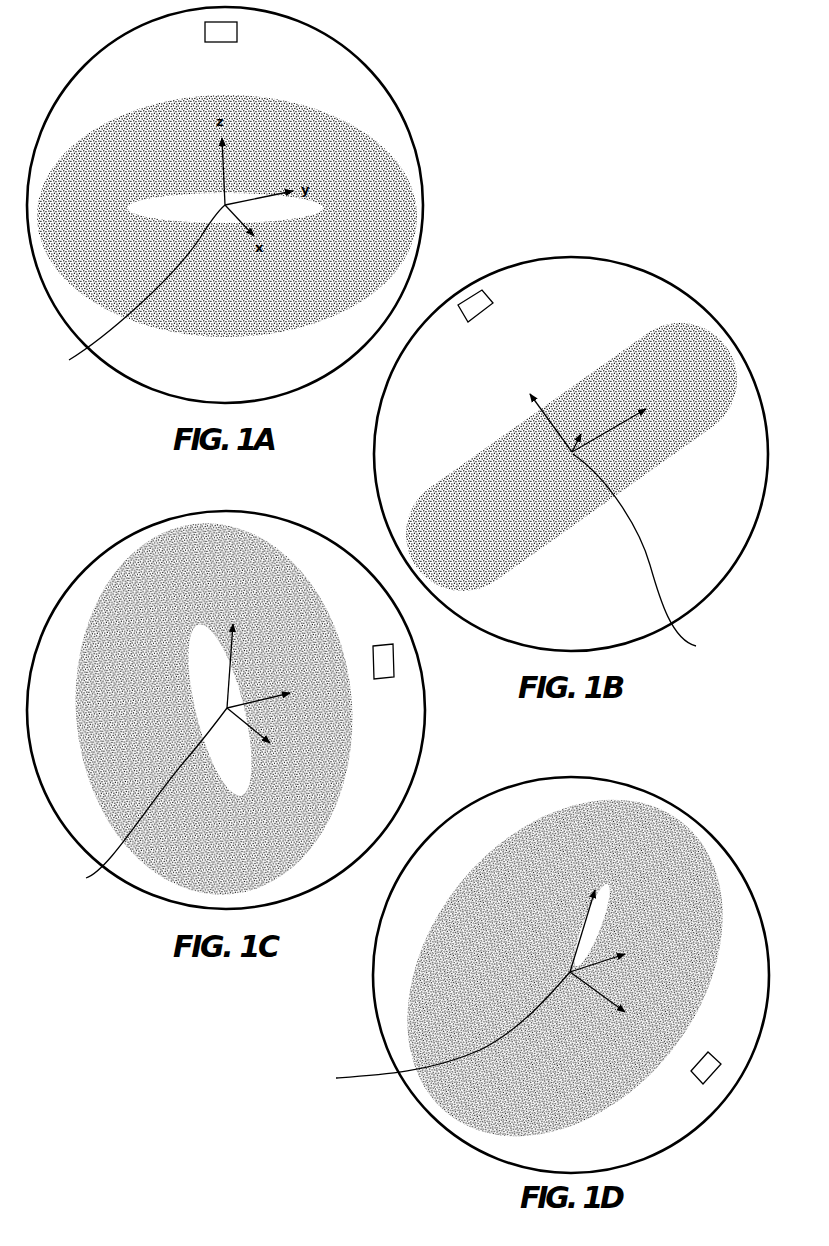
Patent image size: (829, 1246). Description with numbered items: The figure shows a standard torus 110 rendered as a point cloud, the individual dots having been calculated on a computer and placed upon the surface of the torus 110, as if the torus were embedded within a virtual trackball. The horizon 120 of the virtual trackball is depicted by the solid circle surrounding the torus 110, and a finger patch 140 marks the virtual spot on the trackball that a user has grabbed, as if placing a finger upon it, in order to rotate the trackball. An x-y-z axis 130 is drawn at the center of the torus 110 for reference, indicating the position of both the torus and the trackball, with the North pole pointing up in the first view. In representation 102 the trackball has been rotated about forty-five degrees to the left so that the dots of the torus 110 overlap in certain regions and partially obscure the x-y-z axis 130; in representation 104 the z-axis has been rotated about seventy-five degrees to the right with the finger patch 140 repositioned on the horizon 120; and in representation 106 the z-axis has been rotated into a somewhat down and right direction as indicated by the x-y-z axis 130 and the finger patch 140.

In FIG. 1B, the representation 102 is at (574, 442).
In FIG. 1C, the representation 104 is at (250, 688).
In FIG. 1D, the representation 106 is at (545, 968).
In FIG. 1A, the torus 110 is at (349, 116).
In FIG. 1B, the torus 110 is at (684, 322).
In FIG. 1C, the torus 110 is at (135, 554).
In FIG. 1D, the torus 110 is at (716, 870).
In FIG. 1A, the horizon 120 is at (370, 60).
In FIG. 1B, the horizon 120 is at (676, 282).
In FIG. 1C, the horizon 120 is at (165, 520).
In FIG. 1D, the horizon 120 is at (656, 793).
In FIG. 1A, the x-y-z axis 130 is at (131, 290).
In FIG. 1B, the x-y-z axis 130 is at (650, 555).
In FIG. 1C, the x-y-z axis 130 is at (141, 800).
In FIG. 1D, the x-y-z axis 130 is at (436, 1030).
In FIG. 1A, the finger patch 140 is at (205, 26).
In FIG. 1B, the finger patch 140 is at (478, 297).
In FIG. 1C, the finger patch 140 is at (386, 671).
In FIG. 1D, the finger patch 140 is at (710, 1084).